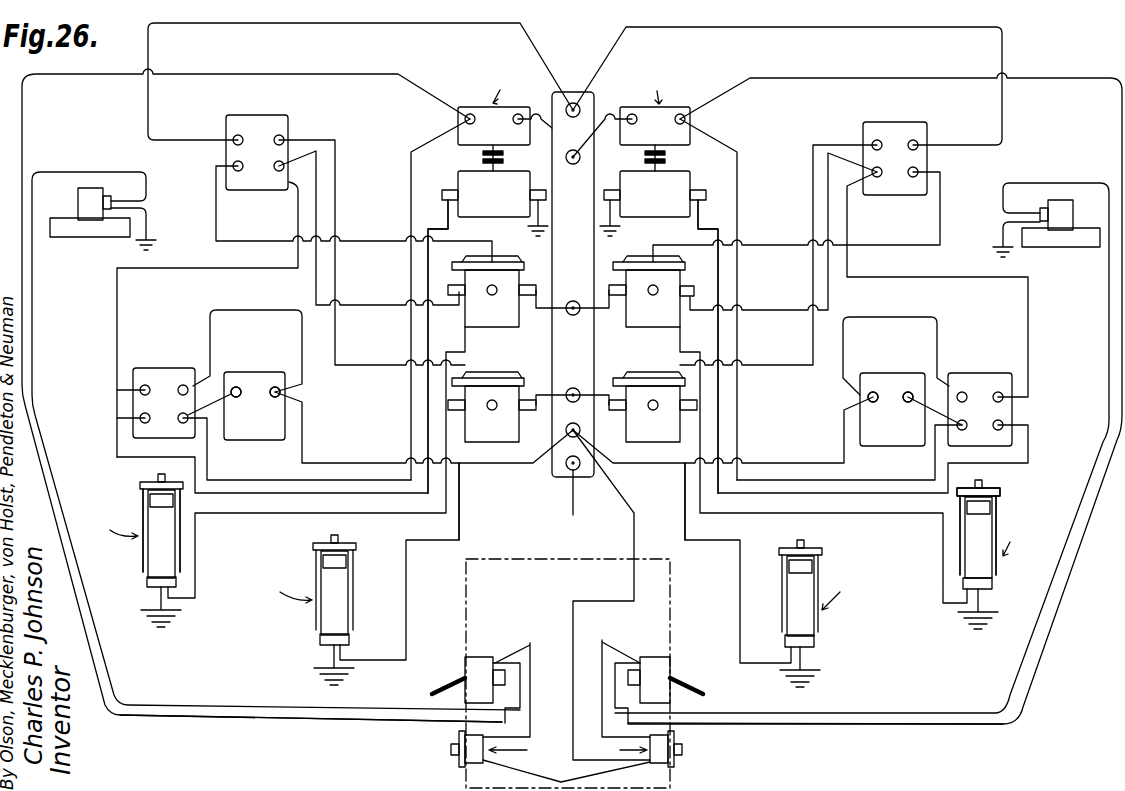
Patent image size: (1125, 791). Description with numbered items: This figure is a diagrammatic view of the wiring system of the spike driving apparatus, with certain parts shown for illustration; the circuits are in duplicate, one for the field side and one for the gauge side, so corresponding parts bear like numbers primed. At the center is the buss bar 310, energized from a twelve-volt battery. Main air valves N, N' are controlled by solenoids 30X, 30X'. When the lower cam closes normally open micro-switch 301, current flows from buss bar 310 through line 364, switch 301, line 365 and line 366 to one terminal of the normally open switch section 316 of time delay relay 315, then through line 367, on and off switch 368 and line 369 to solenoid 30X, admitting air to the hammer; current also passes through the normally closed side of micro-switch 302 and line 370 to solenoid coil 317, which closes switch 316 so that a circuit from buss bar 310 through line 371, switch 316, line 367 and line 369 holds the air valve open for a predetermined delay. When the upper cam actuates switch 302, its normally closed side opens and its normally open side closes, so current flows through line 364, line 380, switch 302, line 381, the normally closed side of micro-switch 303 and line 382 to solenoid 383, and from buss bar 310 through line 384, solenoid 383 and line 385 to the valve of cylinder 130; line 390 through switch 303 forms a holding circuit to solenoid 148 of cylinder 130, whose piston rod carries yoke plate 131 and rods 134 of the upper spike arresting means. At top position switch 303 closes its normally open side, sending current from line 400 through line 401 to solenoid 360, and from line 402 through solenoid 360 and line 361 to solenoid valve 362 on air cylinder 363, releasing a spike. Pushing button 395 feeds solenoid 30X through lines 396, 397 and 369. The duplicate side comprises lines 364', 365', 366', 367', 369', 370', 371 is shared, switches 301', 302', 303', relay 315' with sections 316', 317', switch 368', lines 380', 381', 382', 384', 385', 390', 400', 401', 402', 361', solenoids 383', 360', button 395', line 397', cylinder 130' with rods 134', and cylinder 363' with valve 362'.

The buss bar 310 is at (586, 277).
The line 367' is at (262, 395).
The line 367 is at (876, 398).
The line 369' is at (311, 699).
The line 369 is at (815, 703).
The line 400' is at (360, 81).
The line 400 is at (809, 86).
The normally open switch section 316' is at (475, 265).
The normally open switch section 316 is at (655, 273).
The line 371 is at (535, 115).
The time delay relay switch 315' is at (485, 319).
The time delay relay switch 315 is at (669, 319).
The solenoid coil section 317' is at (467, 346).
The solenoid coil section 317 is at (670, 346).
The micro-switch 303' is at (260, 140).
The micro-switch 303 is at (895, 144).
The line 382' is at (327, 214).
The line 382 is at (816, 217).
The line 390' is at (369, 228).
The line 390 is at (783, 231).
The line 401' is at (372, 268).
The line 401 is at (778, 272).
The line 381' is at (207, 319).
The line 381 is at (937, 321).
The line 380' is at (247, 335).
The line 380 is at (896, 339).
The line 364' is at (424, 526).
The line 364 is at (723, 530).
The line 385' is at (316, 462).
The line 385 is at (823, 461).
The line 361' is at (476, 501).
The line 361 is at (660, 501).
The line 366' is at (297, 451).
The line 366 is at (849, 454).
The line 370' is at (262, 441).
The line 370 is at (900, 452).
The micro-switch 302' is at (126, 389).
The micro-switch 302 is at (1005, 392).
The micro-switch 301' is at (236, 403).
The micro-switch 301 is at (910, 407).
The line 365' is at (254, 401).
The line 365 is at (890, 407).
The solenoid 383' is at (488, 284).
The solenoid 383 is at (667, 284).
The line 384' is at (537, 319).
The line 384 is at (599, 311).
The solenoid 360' is at (492, 395).
The solenoid 360 is at (653, 395).
The line 402' is at (541, 379).
The line 402 is at (599, 379).
The line 396 is at (634, 577).
The on and off switch 368' is at (470, 685).
The on and off switch 368 is at (668, 685).
The line 397' is at (504, 671).
The line 397 is at (615, 674).
The button 395' is at (533, 759).
The button 395 is at (612, 760).
The solenoid 30X' is at (99, 211).
The solenoid 30X is at (1054, 217).
The main air valve N' is at (276, 441).
The main air valve N is at (862, 448).
The cylinder 130' is at (127, 550).
The cylinder 130 is at (979, 554).
The rods 134' is at (195, 530).
The rods 134 is at (1003, 537).
The yoke plate 131 is at (1000, 491).
The solenoid 148 is at (990, 586).
The air cylinder 363' is at (296, 610).
The air cylinder 363 is at (835, 613).
The solenoid valve 362' is at (306, 650).
The solenoid valve 362 is at (830, 650).